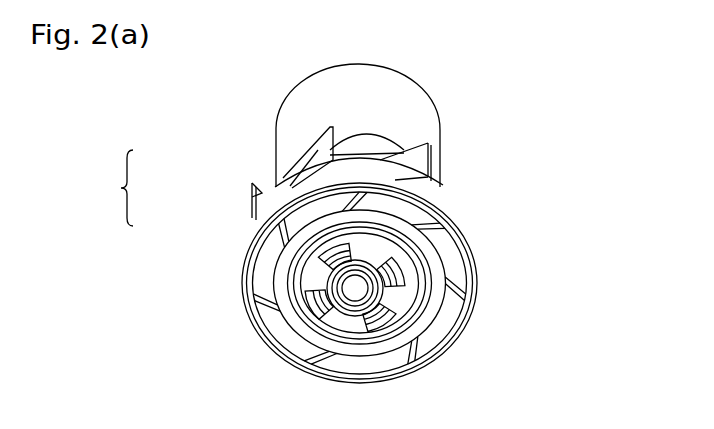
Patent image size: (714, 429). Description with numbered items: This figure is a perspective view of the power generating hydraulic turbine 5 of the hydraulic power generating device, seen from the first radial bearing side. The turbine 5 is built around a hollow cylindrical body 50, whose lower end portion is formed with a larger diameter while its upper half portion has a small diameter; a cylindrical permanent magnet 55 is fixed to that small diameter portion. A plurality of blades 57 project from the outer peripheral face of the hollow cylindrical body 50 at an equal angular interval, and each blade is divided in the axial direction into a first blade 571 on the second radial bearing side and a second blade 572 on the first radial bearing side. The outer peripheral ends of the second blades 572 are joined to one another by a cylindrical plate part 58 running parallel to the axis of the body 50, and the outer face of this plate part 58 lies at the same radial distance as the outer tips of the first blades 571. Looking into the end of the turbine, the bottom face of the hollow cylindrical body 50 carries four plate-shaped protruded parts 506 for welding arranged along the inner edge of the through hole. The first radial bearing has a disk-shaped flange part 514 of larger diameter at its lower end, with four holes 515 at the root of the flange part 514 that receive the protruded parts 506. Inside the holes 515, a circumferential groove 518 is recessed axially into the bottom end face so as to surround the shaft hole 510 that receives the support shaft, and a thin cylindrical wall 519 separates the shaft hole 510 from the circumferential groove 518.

The power generating hydraulic turbine 5 is at (377, 102).
The hollow cylindrical body 50 is at (362, 146).
The cylindrical permanent magnet 55 is at (292, 116).
The blades 57 is at (179, 189).
The first blade 571 is at (250, 193).
The second blade 572 is at (251, 232).
The cylindrical plate part 58 is at (245, 258).
The protruded parts for welding 506 is at (265, 337).
The shaft hole 510 is at (365, 288).
The flange part 514 is at (317, 347).
The holes 515 is at (315, 338).
The circumferential groove 518 is at (347, 328).
The thin cylindrical wall 519 is at (368, 315).